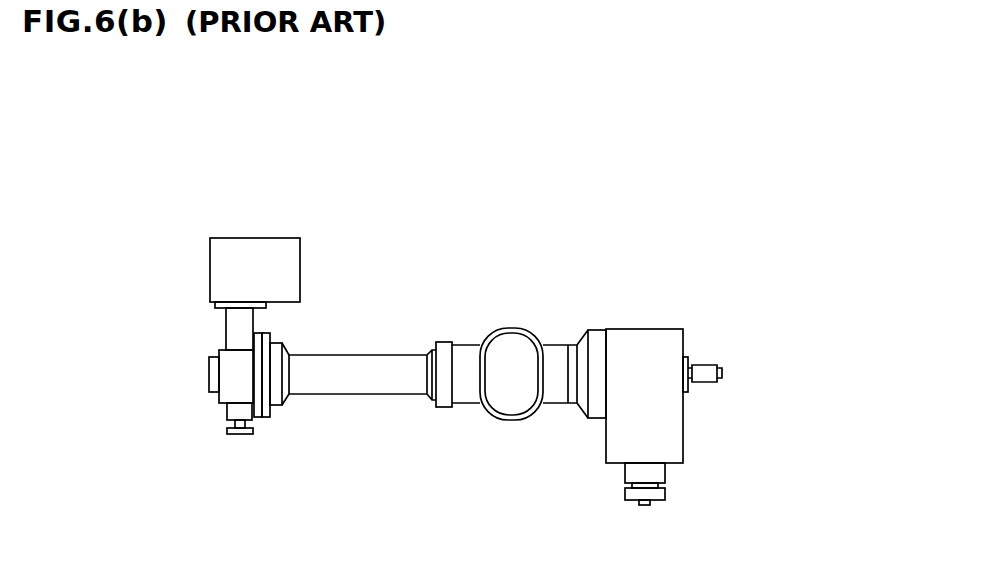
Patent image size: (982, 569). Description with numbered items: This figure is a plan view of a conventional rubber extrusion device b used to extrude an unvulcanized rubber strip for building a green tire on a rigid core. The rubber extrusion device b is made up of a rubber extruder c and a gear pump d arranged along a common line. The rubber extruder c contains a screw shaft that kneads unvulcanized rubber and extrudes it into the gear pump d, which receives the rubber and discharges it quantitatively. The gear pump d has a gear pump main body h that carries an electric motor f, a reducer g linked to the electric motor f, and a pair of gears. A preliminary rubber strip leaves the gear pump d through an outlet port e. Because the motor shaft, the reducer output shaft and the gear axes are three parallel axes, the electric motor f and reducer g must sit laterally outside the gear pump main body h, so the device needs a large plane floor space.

The rubber extrusion device b is at (463, 190).
The rubber extruder c is at (445, 333).
The gear pump d is at (297, 332).
The outlet port e is at (213, 368).
The electric motor f is at (265, 243).
The reducer g is at (227, 230).
The gear pump main body h is at (230, 392).